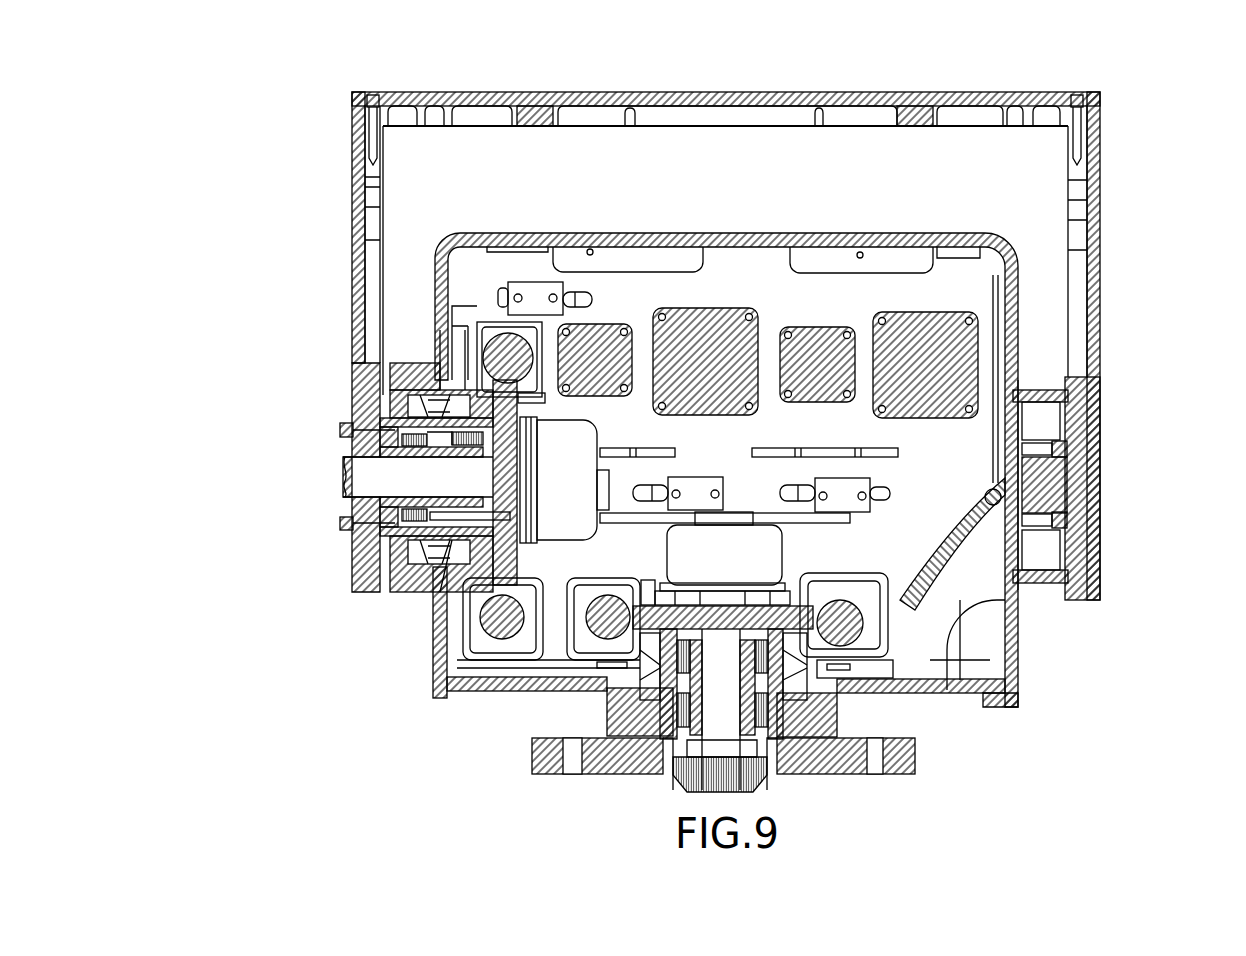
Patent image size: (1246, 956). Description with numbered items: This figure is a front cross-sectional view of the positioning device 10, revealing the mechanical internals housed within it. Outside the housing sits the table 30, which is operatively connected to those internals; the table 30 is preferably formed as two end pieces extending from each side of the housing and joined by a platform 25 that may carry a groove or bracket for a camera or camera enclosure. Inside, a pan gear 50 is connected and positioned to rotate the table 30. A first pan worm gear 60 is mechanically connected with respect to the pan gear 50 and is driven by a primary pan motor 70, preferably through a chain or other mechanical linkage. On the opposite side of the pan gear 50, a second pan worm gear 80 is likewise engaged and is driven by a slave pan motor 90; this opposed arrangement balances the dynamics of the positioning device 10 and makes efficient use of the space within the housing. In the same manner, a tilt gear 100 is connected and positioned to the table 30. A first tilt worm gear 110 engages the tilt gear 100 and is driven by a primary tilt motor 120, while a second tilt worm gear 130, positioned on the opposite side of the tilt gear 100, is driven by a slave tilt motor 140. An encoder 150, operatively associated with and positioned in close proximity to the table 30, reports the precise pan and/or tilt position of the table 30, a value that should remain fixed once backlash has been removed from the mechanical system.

The positioning device 10 is at (247, 173).
The platform 25 is at (1003, 92).
The table 30 is at (1133, 163).
The pan gear 50 is at (802, 600).
The first pan worm gear 60 is at (847, 633).
The primary pan motor 70 is at (927, 347).
The second pan worm gear 80 is at (588, 626).
The slave pan motor 90 is at (812, 352).
The tilt gear 100 is at (463, 572).
The first tilt worm gear 110 is at (502, 352).
The primary tilt motor 120 is at (705, 342).
The second tilt worm gear 130 is at (500, 626).
The slave tilt motor 140 is at (592, 348).
The encoder 150 is at (585, 442).